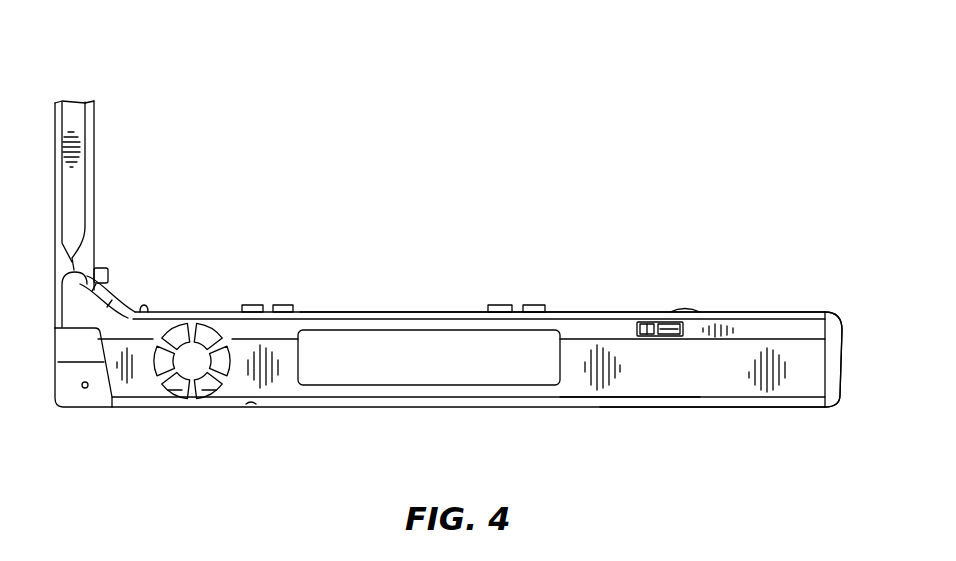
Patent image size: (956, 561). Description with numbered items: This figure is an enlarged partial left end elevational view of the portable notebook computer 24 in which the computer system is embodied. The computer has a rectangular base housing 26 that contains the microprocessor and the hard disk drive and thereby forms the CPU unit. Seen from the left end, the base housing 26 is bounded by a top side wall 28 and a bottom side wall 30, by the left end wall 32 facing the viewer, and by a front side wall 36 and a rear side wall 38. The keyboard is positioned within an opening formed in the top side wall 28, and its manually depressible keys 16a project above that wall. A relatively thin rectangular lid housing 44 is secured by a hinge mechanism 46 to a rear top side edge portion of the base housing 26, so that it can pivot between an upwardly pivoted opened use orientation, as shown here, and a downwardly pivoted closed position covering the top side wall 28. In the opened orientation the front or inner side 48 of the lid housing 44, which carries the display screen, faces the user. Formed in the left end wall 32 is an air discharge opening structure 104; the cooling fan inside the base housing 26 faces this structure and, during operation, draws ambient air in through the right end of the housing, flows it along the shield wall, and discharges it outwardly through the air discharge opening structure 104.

The portable notebook computer 24 is at (457, 220).
The base housing 26 is at (790, 422).
The top side wall 28 is at (775, 314).
The bottom side wall 30 is at (691, 410).
The left end wall 32 is at (712, 384).
The front side wall 36 is at (845, 362).
The rear side wall 38 is at (55, 378).
The lid housing 44 is at (76, 88).
The hinge mechanism 46 is at (76, 291).
The front side of lid housing 48 is at (97, 166).
The air discharge opening structure 104 is at (153, 372).
The keys 16a is at (252, 305).